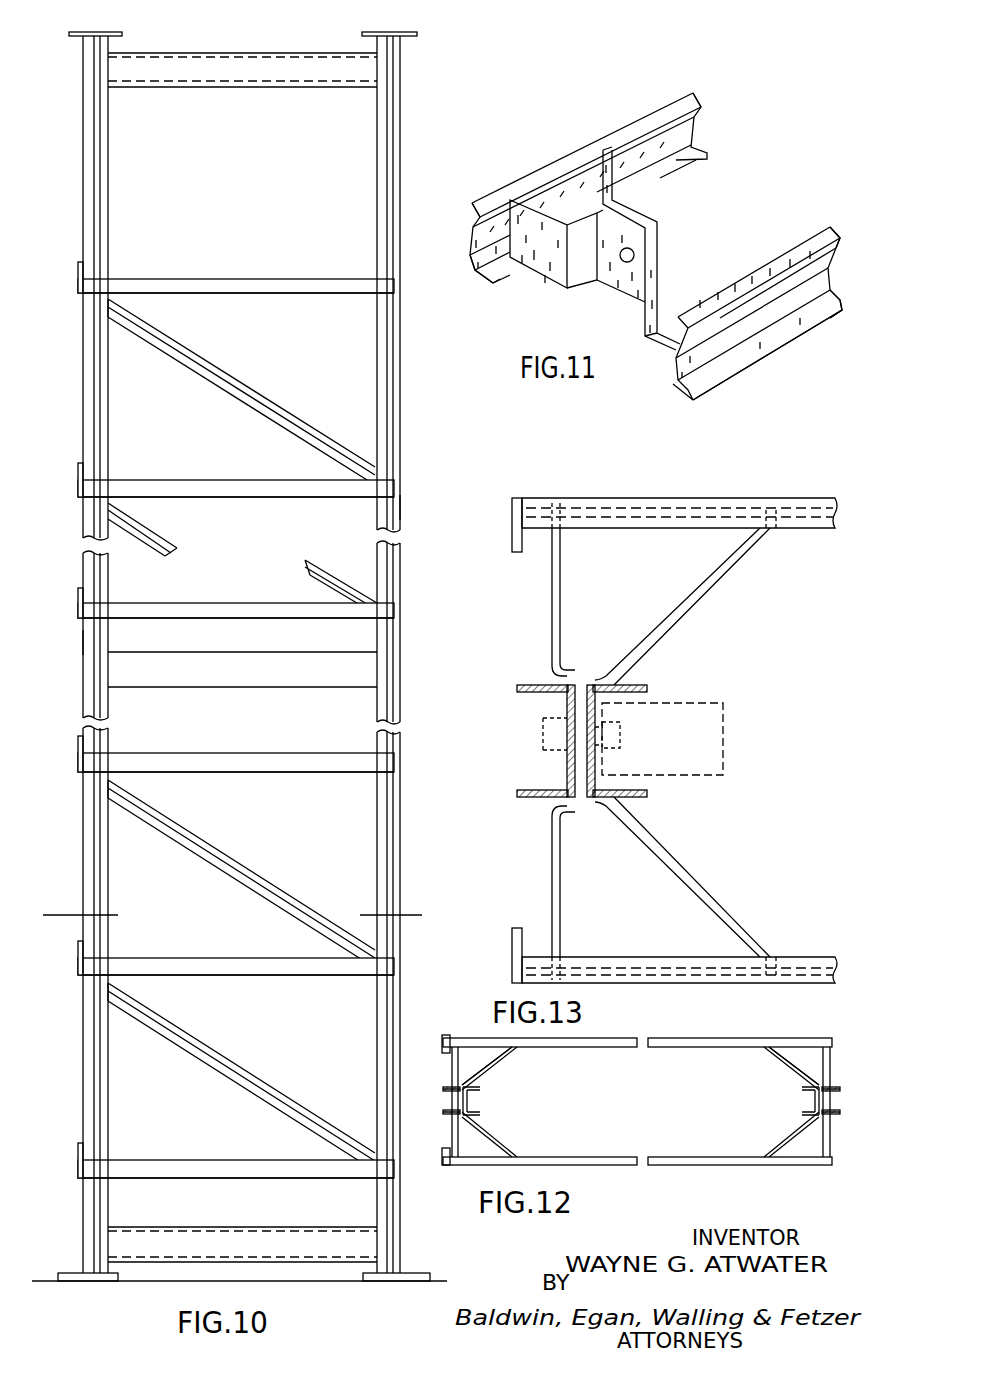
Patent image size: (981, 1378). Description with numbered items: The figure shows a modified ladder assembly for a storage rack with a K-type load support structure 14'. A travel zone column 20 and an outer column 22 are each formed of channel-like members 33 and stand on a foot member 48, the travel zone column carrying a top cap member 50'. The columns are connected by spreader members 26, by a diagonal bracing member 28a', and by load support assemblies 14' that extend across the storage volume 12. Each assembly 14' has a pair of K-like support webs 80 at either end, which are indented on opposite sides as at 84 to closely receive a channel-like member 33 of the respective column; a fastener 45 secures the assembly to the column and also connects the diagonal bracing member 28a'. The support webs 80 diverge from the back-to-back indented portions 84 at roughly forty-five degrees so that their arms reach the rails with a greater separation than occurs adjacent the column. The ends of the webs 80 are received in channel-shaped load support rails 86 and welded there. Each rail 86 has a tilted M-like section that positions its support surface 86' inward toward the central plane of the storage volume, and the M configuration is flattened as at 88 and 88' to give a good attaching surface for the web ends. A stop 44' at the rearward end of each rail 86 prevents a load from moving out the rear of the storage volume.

In FIG. 10, the storage volumes or bins 12 is at (57, 903).
In FIG. 10, the load support structure 14' is at (236, 709).
In FIG. 11, the load support structure 14' is at (642, 246).
In FIG. 13, the load support structure 14' is at (534, 741).
In FIG. 12, the load support structure 14' is at (640, 1102).
In FIG. 10, the travel zone column 20 is at (405, 706).
In FIG. 12, the travel zone column 20 is at (838, 1078).
In FIG. 10, the outer column 22 is at (77, 867).
In FIG. 13, the outer column 22 is at (540, 803).
In FIG. 12, the outer column 22 is at (455, 1118).
In FIG. 10, the spreader member 26 is at (220, 89).
In FIG. 10, the diagonal bracing member 28a' is at (242, 735).
In FIG. 13, the diagonal bracing member 28a' is at (692, 739).
In FIG. 10, the channel-like member 33 is at (398, 516).
In FIG. 13, the channel-like member 33 is at (640, 685).
In FIG. 12, the channel-like member 33 is at (450, 1088).
In FIG. 10, the stop 44' is at (92, 718).
In FIG. 13, the stop 44' is at (492, 738).
In FIG. 12, the stop 44' is at (441, 1114).
In FIG. 13, the fastener 45 is at (622, 742).
In FIG. 10, the foot member 48 is at (74, 1286).
In FIG. 10, the top cap member 50' is at (275, 30).
In FIG. 11, the support web 80 is at (660, 228).
In FIG. 13, the support web 80 is at (708, 592).
In FIG. 12, the support web 80 is at (500, 1058).
In FIG. 11, the indented portion 84 is at (627, 207).
In FIG. 13, the indented portion 84 is at (645, 705).
In FIG. 10, the load support rail 86 is at (239, 710).
In FIG. 11, the load support rail 86 is at (661, 246).
In FIG. 13, the load support rail 86 is at (679, 735).
In FIG. 12, the load support rail 86 is at (637, 1097).
In FIG. 11, the support surface 86' is at (815, 223).
In FIG. 13, the support surface 86' is at (679, 738).
In FIG. 11, the flattened portion 88 is at (638, 303).
In FIG. 13, the flattened portion 88 is at (679, 941).
In FIG. 13, the beam lip 88' is at (679, 536).